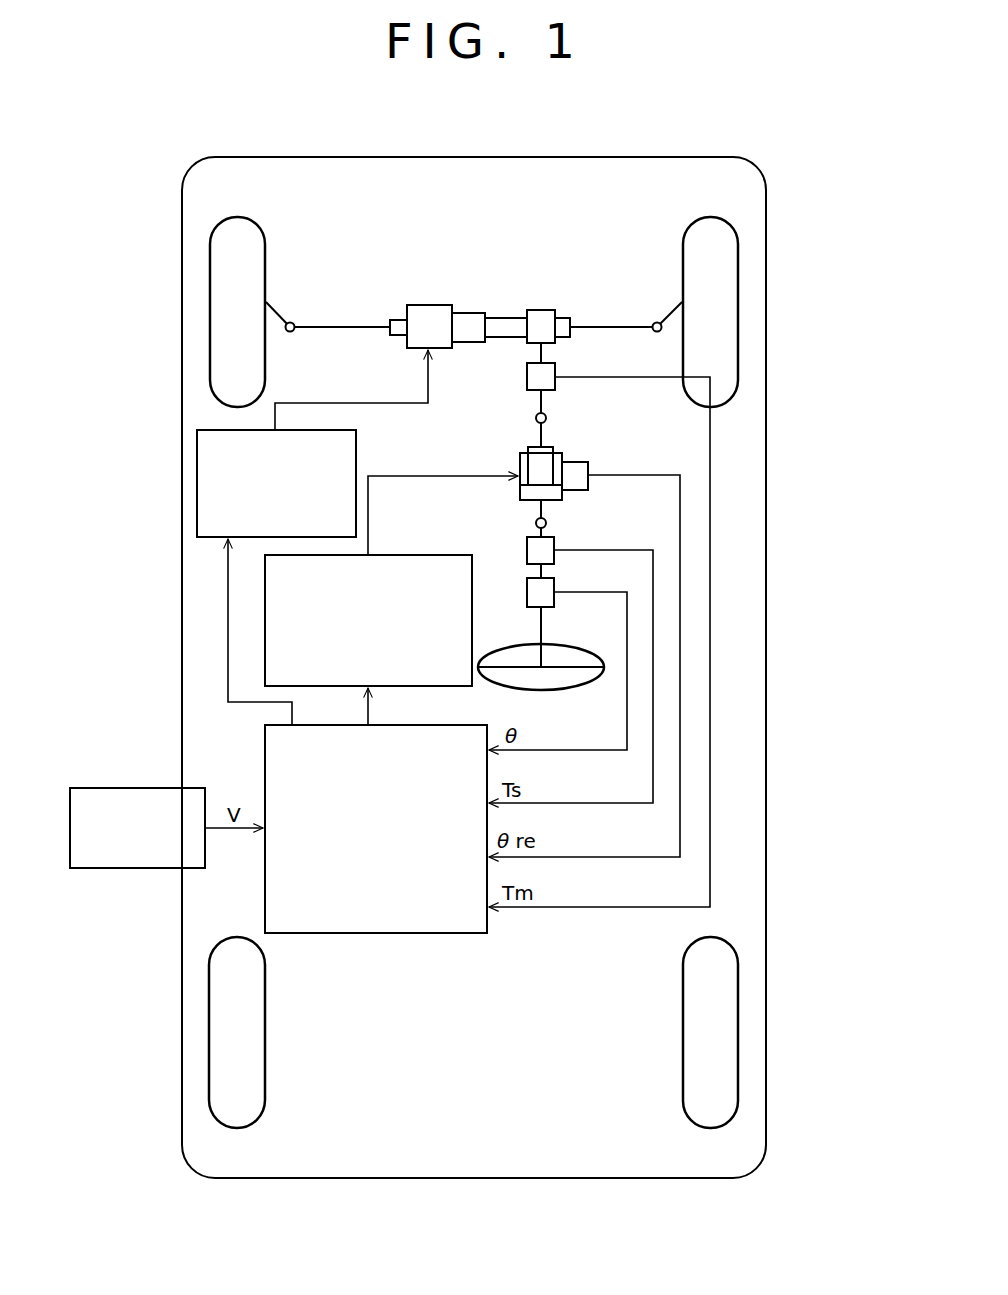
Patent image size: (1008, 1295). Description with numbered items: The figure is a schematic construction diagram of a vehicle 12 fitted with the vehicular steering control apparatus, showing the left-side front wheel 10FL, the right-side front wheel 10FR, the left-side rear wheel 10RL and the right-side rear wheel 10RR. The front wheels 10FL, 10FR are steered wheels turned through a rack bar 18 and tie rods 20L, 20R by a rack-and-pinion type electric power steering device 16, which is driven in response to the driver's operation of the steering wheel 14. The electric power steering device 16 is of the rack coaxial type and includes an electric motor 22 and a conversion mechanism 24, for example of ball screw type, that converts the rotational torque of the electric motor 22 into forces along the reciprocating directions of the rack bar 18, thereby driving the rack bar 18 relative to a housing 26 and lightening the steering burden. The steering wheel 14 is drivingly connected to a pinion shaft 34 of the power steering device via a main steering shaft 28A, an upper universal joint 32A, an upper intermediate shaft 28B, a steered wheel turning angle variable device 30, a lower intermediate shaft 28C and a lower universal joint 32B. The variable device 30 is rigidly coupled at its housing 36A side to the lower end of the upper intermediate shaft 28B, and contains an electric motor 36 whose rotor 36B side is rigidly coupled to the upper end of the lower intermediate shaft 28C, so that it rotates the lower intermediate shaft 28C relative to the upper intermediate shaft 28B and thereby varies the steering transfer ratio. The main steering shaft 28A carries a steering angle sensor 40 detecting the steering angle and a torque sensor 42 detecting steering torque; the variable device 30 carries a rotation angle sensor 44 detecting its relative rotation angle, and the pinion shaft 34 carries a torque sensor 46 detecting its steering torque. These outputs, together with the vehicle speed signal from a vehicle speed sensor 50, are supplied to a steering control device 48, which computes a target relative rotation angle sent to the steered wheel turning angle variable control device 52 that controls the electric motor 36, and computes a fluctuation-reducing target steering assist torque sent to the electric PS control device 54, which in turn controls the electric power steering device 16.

The left-side front wheel 10FL is at (210, 318).
The right-side front wheel 10FR is at (738, 312).
The left-side rear wheel 10RL is at (209, 1033).
The right-side rear wheel 10RR is at (738, 1032).
The vehicle 12 is at (766, 557).
The steering wheel 14 is at (563, 690).
The electric power steering device 16 is at (510, 298).
The rack bar 18 is at (353, 325).
The left tie rod 20L is at (278, 308).
The right tie rod 20R is at (672, 302).
The electric motor 22 is at (432, 305).
The conversion mechanism 24 is at (467, 344).
The housing 26 is at (400, 336).
The main steering shaft 28A is at (544, 621).
The upper intermediate shaft 28B is at (545, 508).
The lower intermediate shaft 28C is at (543, 435).
The steered wheel turning angle variable device 30 is at (570, 454).
The upper universal joint 32A is at (547, 525).
The lower universal joint 32B is at (536, 418).
The pinion shaft 34 is at (545, 354).
The electric motor 36 is at (514, 496).
The housing 36A is at (521, 503).
The rotor 36B is at (528, 457).
The steering angle sensor 40 is at (527, 592).
The torque sensor 42 is at (527, 551).
The rotation angle sensor 44 is at (580, 462).
The torque sensor 46 is at (527, 376).
The steering control device 48 is at (376, 829).
The vehicle speed sensor 50 is at (122, 788).
The steered wheel turning angle variable control device 52 is at (368, 620).
The electric power steering control device 54 is at (276, 483).